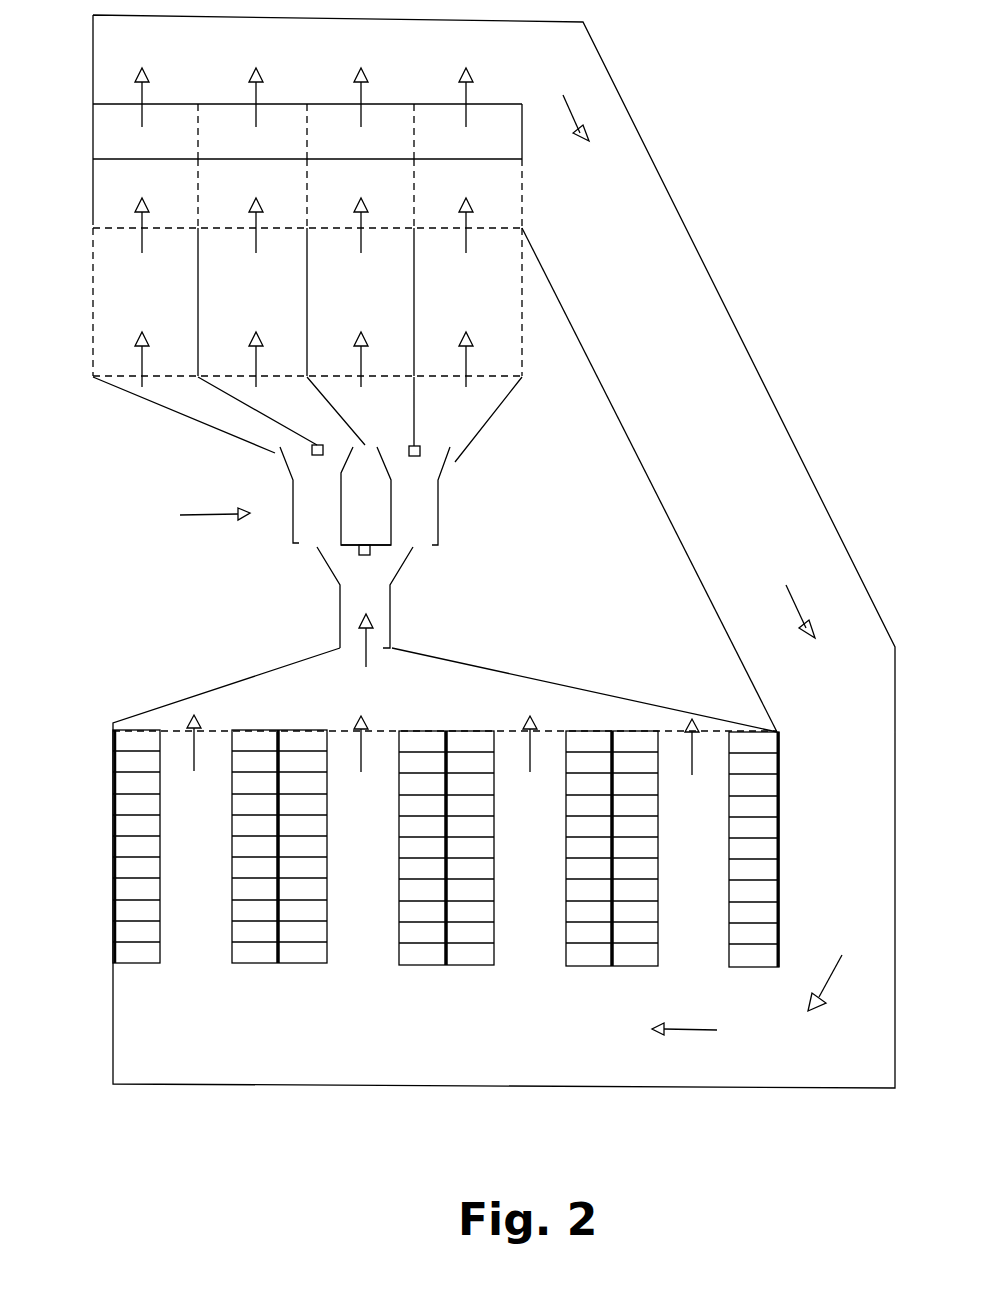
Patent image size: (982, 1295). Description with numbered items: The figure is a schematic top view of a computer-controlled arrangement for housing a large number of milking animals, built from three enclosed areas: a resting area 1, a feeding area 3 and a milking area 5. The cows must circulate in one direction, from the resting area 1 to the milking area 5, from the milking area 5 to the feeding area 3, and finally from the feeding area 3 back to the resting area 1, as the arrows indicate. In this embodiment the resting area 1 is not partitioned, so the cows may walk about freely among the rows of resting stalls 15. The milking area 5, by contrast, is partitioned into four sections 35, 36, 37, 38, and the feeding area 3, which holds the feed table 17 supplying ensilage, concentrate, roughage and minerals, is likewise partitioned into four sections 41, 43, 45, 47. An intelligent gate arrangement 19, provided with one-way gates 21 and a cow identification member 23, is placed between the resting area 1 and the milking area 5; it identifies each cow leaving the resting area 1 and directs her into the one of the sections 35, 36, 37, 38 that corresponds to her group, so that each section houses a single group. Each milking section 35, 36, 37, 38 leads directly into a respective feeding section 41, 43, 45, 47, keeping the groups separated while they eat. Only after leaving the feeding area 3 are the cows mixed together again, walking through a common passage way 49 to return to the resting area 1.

The resting area 1 is at (112, 822).
The feeding area 3 is at (90, 205).
The milking area 5 is at (90, 300).
The resting stall 15 is at (152, 847).
The feed table 17 is at (90, 133).
The intelligent gate arrangement 19 is at (200, 514).
The one-way gate 21 is at (350, 459).
The cow identification member 23 is at (365, 556).
The milking area section 35 is at (162, 315).
The milking area section 36 is at (273, 315).
The milking area section 37 is at (381, 317).
The milking area section 38 is at (489, 318).
The feeding area section 41 is at (162, 215).
The feeding area section 43 is at (273, 215).
The feeding area section 45 is at (382, 215).
The feeding area section 47 is at (489, 215).
The common passage way 49 is at (682, 553).